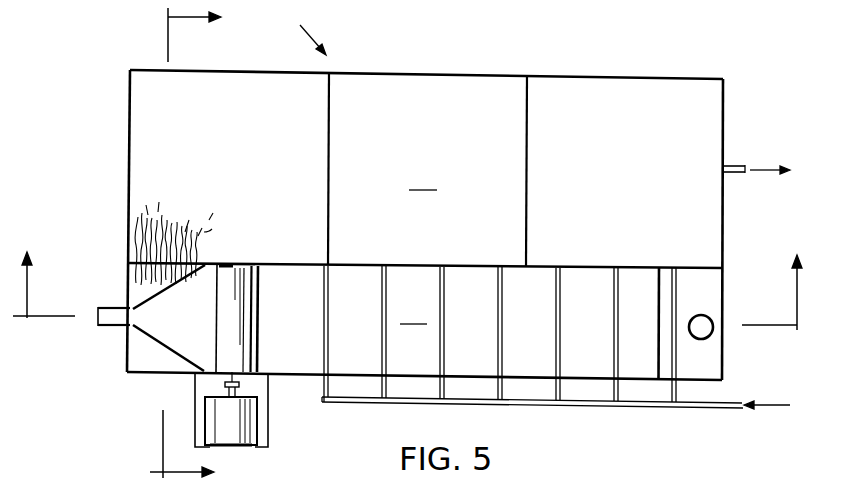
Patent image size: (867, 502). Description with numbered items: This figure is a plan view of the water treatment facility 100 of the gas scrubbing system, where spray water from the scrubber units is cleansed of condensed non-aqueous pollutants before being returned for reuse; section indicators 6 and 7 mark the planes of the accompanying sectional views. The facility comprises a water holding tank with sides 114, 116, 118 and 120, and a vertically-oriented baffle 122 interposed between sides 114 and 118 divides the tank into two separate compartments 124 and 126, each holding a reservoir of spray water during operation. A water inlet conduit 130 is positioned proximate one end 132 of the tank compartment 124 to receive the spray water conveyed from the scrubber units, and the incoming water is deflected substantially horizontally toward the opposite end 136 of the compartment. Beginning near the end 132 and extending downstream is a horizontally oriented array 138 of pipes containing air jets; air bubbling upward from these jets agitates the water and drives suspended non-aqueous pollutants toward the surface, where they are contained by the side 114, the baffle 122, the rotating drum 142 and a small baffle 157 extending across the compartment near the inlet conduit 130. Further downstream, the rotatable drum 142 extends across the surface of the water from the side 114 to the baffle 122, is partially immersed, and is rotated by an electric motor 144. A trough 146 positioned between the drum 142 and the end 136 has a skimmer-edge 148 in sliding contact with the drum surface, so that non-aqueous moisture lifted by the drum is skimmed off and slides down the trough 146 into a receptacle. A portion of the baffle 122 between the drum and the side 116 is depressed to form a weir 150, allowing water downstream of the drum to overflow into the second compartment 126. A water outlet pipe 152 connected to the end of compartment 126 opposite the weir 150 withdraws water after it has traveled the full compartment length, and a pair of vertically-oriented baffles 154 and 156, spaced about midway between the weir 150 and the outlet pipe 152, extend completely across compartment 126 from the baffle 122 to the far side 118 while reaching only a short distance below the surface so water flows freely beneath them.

The water treatment facility 100 is at (310, 31).
The tank side 114 is at (535, 380).
The tank side 116 is at (128, 117).
The tank side 118 is at (414, 74).
The tank side 120 is at (723, 127).
The vertically-oriented baffle 122 is at (405, 265).
The tank compartment 124 is at (413, 314).
The tank compartment 126 is at (423, 180).
The water inlet conduit 130 is at (713, 315).
The tank compartment end 132 is at (723, 362).
The tank compartment end 136 is at (126, 346).
The array of pipes 138 is at (619, 407).
The rotatable drum 142 is at (228, 322).
The electric motor 144 is at (232, 421).
The trough 146 is at (173, 337).
The skimmer-edge 148 is at (228, 265).
The weir 150 is at (174, 240).
The water outlet pipe 152 is at (727, 166).
The vertically-oriented baffle 154 is at (329, 120).
The vertically-oriented baffle 156 is at (527, 131).
The small baffle 157 is at (670, 347).
The section line 6- 6 is at (409, 301).
The section line 7- 7 is at (185, 247).